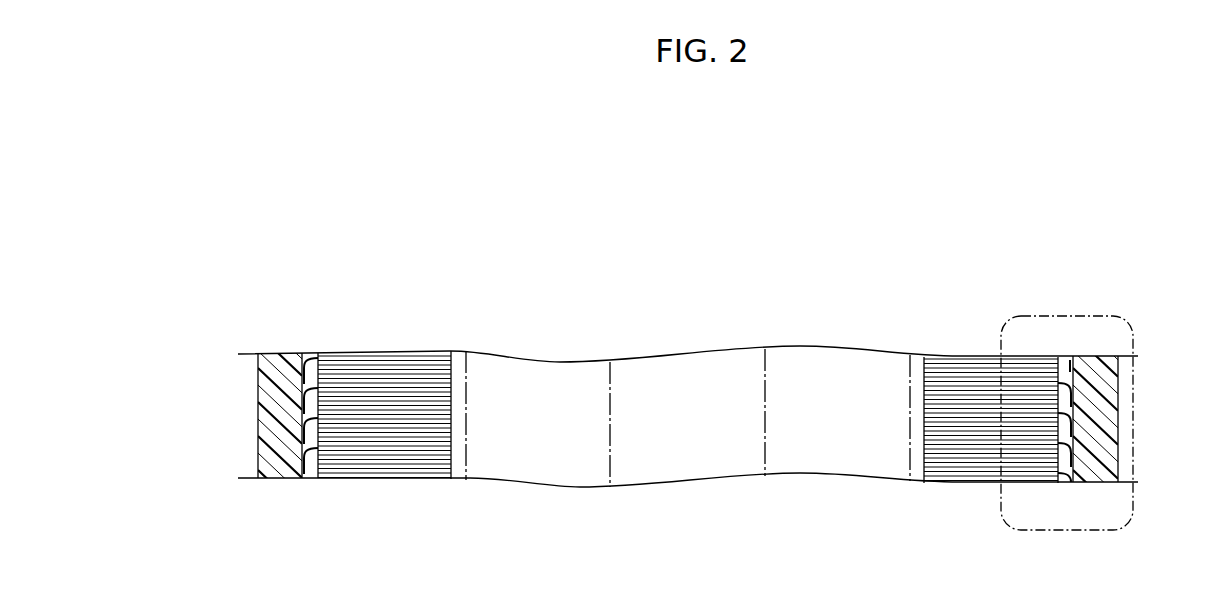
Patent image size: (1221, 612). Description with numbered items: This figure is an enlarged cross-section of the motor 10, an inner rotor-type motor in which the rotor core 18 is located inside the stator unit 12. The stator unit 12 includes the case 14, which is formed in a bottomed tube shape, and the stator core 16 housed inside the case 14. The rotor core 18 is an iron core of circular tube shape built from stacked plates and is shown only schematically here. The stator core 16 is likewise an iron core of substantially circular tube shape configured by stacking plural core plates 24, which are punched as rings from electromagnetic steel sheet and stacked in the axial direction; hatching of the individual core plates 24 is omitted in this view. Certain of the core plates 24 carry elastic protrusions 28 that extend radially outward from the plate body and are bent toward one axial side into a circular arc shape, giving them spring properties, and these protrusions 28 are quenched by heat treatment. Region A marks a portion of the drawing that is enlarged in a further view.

The motor 10 is at (734, 292).
The stator unit 12 is at (297, 426).
The case 14 is at (257, 398).
The stator core 16 is at (407, 462).
The rotor core 18 is at (837, 455).
The core plates 24 is at (973, 410).
The elastic protrusions 28 is at (305, 352).
The enlarged region A is at (1070, 316).